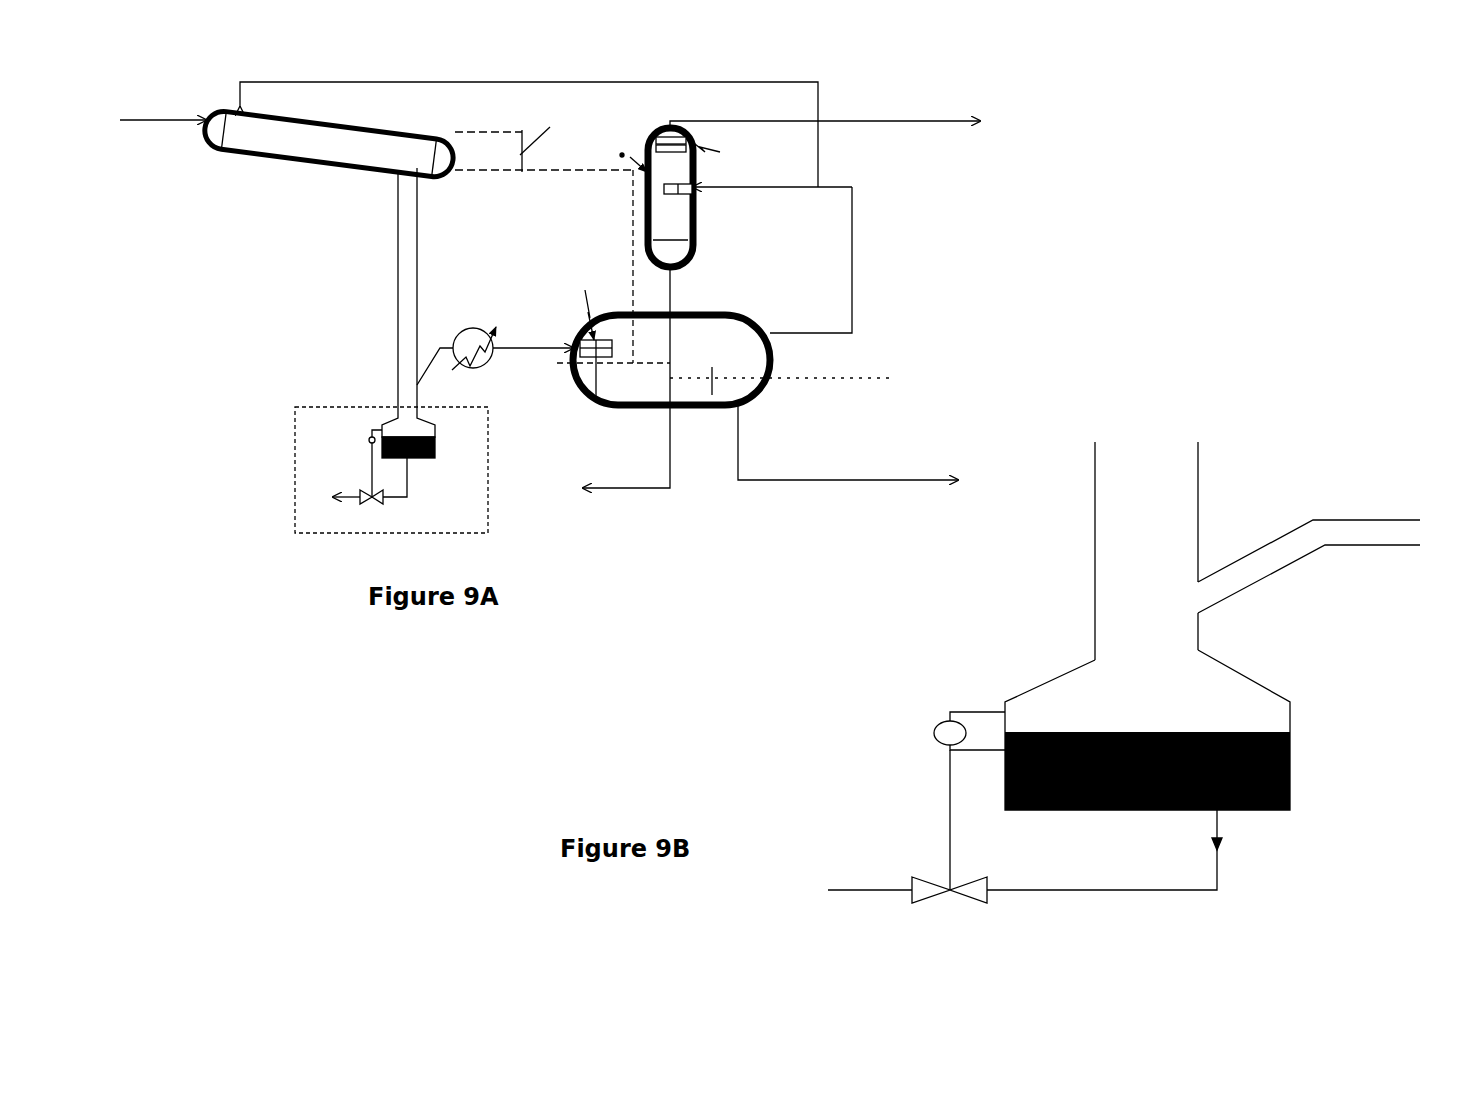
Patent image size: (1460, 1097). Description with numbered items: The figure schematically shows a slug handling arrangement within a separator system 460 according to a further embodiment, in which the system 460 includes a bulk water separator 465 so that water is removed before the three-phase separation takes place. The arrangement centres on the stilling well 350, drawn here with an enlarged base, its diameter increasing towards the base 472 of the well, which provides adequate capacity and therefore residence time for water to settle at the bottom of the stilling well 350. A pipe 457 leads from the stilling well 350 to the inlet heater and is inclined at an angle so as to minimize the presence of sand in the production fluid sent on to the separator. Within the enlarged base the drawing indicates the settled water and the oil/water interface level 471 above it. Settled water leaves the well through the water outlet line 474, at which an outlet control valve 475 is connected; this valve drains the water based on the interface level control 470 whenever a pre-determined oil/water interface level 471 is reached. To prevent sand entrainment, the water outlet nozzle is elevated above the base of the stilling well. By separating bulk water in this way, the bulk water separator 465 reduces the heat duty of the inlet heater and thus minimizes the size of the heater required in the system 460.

In FIG. 9B, the stilling well 350 is at (1093, 545).
In FIG. 9B, the pipe 457 is at (1245, 555).
In FIG. 9A, the system 460 is at (1092, 214).
In FIG. 9A, the bulk water separator 465 is at (322, 538).
In FIG. 9B, the bulk water separator 465 is at (775, 638).
In FIG. 9A, the interface level control 470 is at (351, 430).
In FIG. 9B, the interface level control 470 is at (935, 732).
In FIG. 9B, the liquid level / interface 471 is at (1243, 728).
In FIG. 9B, the base 472 is at (1028, 667).
In FIG. 9B, the water outlet line 474 is at (1217, 868).
In FIG. 9A, the outlet control valve 475 is at (372, 484).
In FIG. 9B, the outlet control valve 475 is at (907, 843).